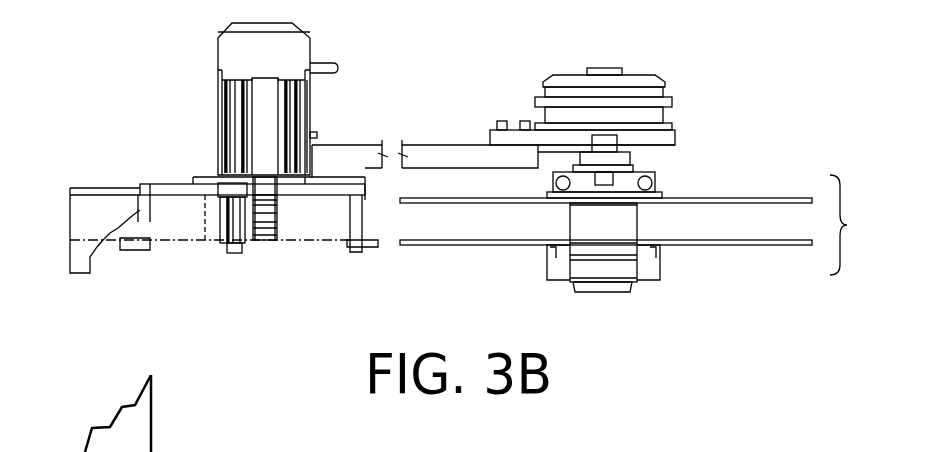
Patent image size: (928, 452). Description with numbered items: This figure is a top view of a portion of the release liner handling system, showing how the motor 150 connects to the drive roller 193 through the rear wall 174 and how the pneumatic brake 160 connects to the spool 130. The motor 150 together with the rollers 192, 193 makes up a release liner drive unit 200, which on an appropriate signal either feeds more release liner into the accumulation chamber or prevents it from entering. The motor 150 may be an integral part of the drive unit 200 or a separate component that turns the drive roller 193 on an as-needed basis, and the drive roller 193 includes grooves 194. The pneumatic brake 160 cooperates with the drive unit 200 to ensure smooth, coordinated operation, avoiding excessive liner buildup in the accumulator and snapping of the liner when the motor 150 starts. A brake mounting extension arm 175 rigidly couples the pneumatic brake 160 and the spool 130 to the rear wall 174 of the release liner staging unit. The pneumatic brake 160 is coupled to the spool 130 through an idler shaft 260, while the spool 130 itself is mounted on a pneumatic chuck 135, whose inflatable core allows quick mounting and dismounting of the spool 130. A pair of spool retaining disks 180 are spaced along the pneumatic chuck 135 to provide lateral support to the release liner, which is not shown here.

The spool 130 is at (650, 225).
The pneumatic chuck 135 is at (655, 303).
The motor 150 is at (228, 52).
The pneumatic brake 160 is at (667, 75).
The rear wall 174 is at (170, 186).
The brake mounting extension arm 175 is at (428, 153).
The spool retaining disks 180 is at (447, 245).
The roller 192 is at (227, 217).
The drive roller 193 is at (278, 223).
The grooves 194 is at (278, 217).
The release liner drive unit 200 is at (355, 100).
The idler shaft 260 is at (603, 153).